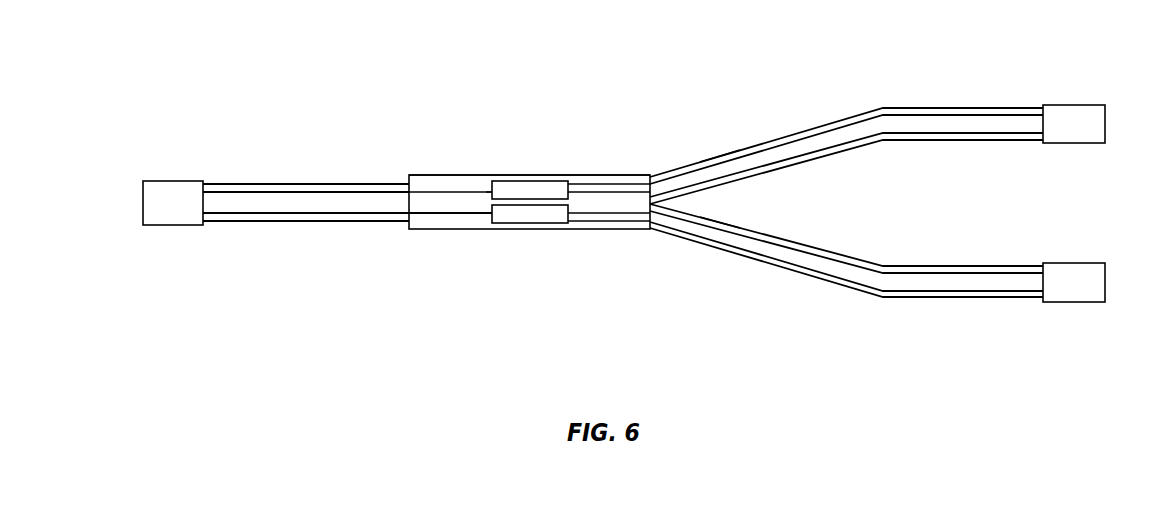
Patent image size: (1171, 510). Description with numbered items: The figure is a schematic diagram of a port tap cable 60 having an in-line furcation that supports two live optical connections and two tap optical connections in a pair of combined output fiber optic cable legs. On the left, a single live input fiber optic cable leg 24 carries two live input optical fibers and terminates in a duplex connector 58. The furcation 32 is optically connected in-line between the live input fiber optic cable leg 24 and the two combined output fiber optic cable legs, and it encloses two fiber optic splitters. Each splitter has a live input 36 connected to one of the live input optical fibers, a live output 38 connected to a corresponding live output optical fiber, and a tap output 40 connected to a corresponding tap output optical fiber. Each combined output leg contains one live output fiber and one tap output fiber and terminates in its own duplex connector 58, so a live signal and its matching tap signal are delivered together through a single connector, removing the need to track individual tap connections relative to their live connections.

The duplex connector 58 is at (143, 188).
The live input fiber optic cable leg 24 is at (273, 181).
The furcation 32 is at (422, 175).
The live input 36 is at (490, 191).
The live output 38 is at (576, 184).
The tap output 40 is at (585, 190).
The port tap cable 60 is at (562, 85).